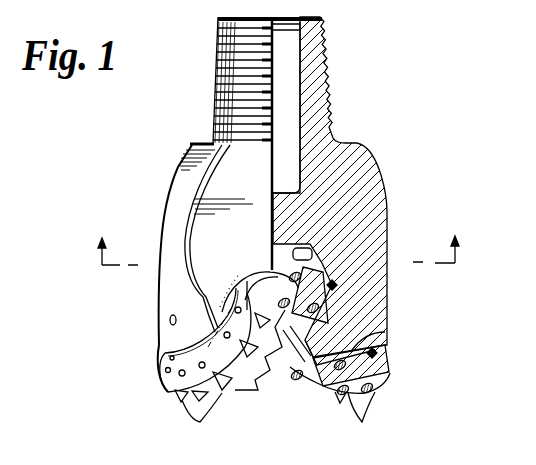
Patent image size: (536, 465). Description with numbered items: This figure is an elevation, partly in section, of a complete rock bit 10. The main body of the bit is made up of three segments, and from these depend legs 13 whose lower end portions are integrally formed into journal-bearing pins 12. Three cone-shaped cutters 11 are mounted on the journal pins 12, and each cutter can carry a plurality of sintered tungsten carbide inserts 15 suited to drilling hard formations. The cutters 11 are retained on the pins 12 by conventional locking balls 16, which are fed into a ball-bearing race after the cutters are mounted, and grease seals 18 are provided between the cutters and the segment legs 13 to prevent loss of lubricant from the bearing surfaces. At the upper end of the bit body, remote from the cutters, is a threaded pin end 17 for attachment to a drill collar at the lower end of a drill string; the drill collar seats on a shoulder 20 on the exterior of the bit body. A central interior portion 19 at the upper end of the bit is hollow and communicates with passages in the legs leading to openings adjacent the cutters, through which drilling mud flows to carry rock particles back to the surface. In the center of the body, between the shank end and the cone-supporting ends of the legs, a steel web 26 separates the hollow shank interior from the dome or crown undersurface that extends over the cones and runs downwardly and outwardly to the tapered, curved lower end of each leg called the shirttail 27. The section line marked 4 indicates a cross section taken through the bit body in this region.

The bit 10 is at (388, 135).
The cone-shaped cutters 11 is at (168, 383).
The journal-bearing pins 12 is at (313, 362).
The legs 13 is at (178, 290).
The sintered tungsten carbide inserts 15 is at (205, 410).
The locking balls 16 is at (350, 348).
The pin end 17 is at (332, 72).
The grease seals 18 is at (336, 284).
The central interior portion 19 is at (245, 75).
The shoulder 20 is at (213, 143).
The web 26 is at (320, 258).
The shirttail 27 is at (165, 352).
The section line 4- 4 is at (273, 266).